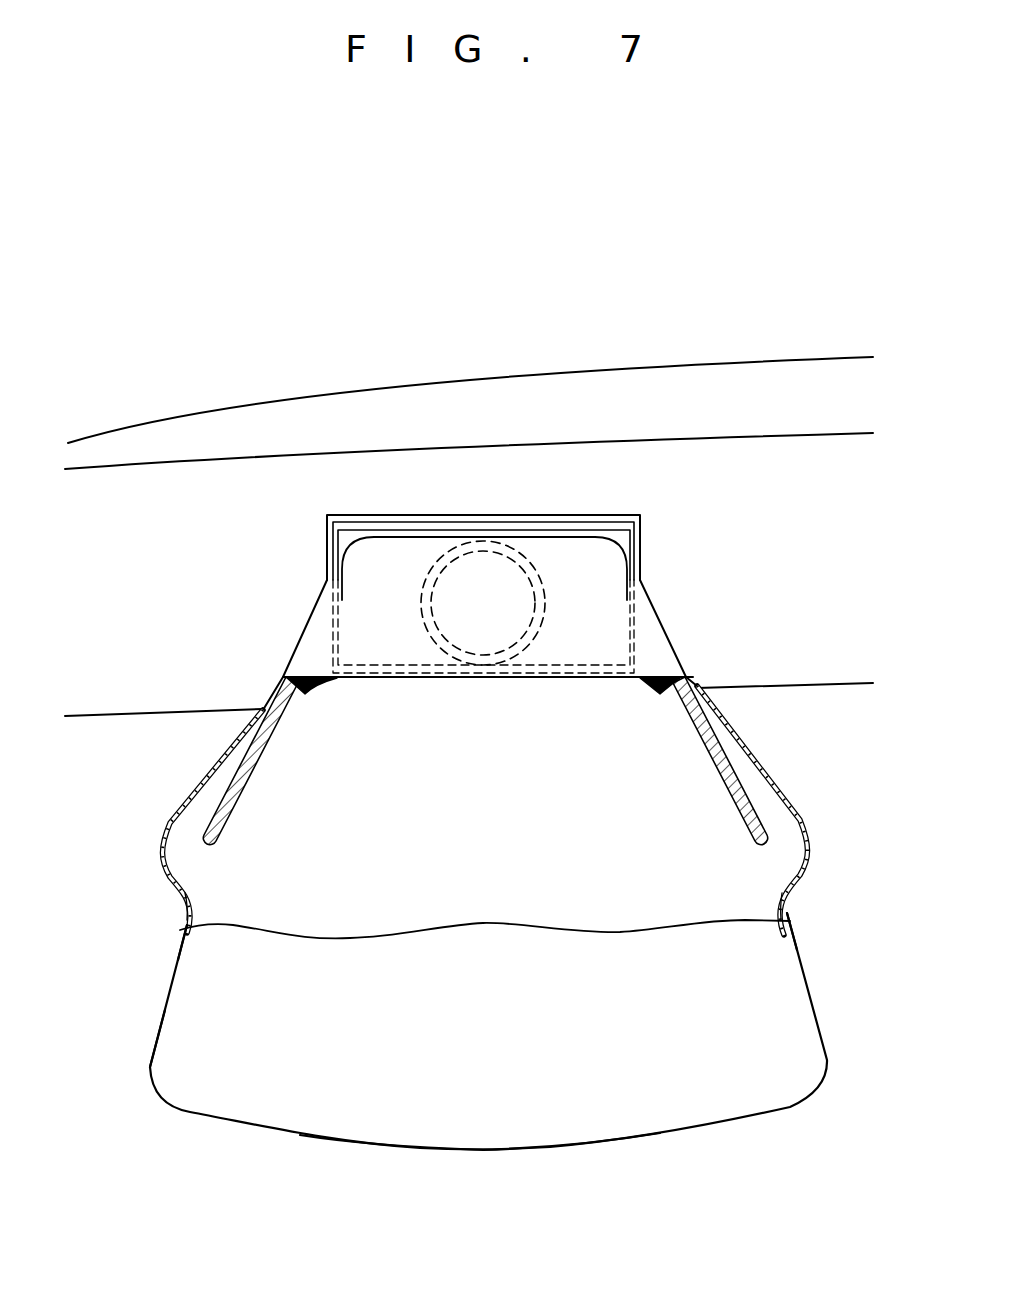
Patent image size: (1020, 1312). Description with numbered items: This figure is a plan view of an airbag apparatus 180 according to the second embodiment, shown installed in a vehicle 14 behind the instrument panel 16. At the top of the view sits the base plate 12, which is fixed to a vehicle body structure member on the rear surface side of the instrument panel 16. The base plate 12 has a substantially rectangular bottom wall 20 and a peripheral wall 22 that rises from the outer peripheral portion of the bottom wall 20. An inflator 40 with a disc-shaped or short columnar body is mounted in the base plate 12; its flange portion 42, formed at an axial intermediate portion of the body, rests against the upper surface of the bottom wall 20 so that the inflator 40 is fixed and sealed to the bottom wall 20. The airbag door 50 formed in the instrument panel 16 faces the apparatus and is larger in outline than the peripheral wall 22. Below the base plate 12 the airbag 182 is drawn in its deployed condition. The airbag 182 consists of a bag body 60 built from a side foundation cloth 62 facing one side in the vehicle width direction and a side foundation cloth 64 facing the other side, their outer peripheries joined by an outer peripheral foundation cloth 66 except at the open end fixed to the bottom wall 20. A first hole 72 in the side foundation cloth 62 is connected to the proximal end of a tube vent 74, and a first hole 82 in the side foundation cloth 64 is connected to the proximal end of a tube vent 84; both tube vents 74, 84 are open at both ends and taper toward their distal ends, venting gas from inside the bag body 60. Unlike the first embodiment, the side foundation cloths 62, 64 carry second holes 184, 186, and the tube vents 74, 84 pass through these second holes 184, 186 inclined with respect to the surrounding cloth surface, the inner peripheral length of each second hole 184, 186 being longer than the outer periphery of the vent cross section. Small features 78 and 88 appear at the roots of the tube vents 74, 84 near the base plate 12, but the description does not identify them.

The base plate 12 is at (645, 542).
The vehicle 14 is at (635, 336).
The instrument panel 16 is at (847, 660).
The bottom wall 20 is at (330, 548).
The peripheral wall 22 is at (372, 537).
The inflator 40 is at (450, 610).
The flange portion 42 is at (532, 627).
The airbag door 50 is at (483, 518).
The bag body 60 is at (542, 1118).
The side foundation cloth 62 is at (180, 925).
The side foundation cloth 64 is at (790, 915).
The outer peripheral foundation cloth 66 is at (430, 1127).
The first hole 72 is at (193, 897).
The tube vent 74 is at (172, 823).
The left attachment portion 78 is at (320, 680).
The first hole 82 is at (785, 890).
The tube vent 84 is at (783, 793).
The right attachment portion 88 is at (645, 685).
The airbag apparatus 180 is at (752, 614).
The airbag 182 is at (133, 1038).
The second hole 184 is at (243, 793).
The second hole 186 is at (730, 787).